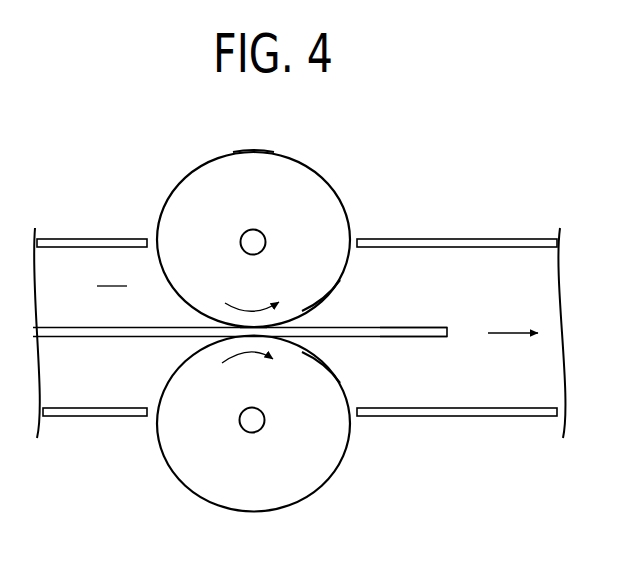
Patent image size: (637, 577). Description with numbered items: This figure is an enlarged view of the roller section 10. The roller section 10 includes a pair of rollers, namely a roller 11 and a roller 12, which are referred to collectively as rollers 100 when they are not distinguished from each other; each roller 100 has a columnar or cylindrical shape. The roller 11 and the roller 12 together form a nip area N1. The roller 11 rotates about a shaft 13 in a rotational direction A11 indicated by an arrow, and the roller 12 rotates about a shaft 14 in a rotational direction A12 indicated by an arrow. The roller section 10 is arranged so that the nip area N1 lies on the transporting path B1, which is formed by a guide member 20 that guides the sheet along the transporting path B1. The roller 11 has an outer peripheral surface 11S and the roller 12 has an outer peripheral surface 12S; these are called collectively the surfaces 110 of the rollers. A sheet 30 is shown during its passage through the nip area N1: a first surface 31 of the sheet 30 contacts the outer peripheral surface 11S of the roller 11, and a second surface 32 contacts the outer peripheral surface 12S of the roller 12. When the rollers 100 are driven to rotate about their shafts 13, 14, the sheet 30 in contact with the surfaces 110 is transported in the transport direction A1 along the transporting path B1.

The roller section 10 is at (154, 152).
The roller 11 is at (337, 171).
The roller 12 is at (158, 474).
The shaft 13 is at (249, 229).
The shaft 14 is at (250, 432).
The rollers 100 is at (248, 328).
The surfaces of the rollers 110 is at (352, 334).
The outer peripheral surface 11S is at (331, 299).
The outer peripheral surface 12S is at (330, 367).
The guide member 20 is at (73, 238).
The sheet 30 is at (99, 321).
The first surface 31 is at (428, 327).
The second surface 32 is at (428, 338).
The nip area N1 is at (201, 325).
The transporting path B1 is at (112, 275).
The transport direction A1 is at (513, 348).
The rotational direction A11 is at (252, 293).
The rotational direction A12 is at (247, 370).